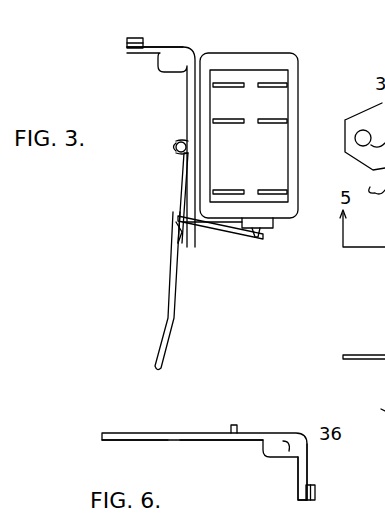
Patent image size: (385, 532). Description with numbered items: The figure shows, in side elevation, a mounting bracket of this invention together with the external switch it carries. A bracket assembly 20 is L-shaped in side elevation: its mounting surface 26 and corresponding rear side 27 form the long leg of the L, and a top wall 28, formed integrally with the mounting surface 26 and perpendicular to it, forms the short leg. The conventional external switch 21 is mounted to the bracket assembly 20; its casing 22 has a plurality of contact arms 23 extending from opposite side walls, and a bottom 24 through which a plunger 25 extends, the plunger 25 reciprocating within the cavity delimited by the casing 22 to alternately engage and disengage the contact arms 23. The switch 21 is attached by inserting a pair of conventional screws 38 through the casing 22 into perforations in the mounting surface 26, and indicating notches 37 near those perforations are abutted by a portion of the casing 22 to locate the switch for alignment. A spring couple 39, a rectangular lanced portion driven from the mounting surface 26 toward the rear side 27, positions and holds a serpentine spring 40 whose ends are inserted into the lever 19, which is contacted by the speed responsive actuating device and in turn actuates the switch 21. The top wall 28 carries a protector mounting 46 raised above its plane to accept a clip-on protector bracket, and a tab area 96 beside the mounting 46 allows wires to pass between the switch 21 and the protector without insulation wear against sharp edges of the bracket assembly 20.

In FIG. 3, the lever 19 is at (166, 282).
In FIG. 3, the bracket assembly 20 is at (153, 55).
In FIG. 3, the external switch 21 is at (249, 52).
In FIG. 3, the casing 22 is at (288, 66).
In FIG. 3, the contact arms 23 is at (280, 123).
In FIG. 3, the bottom 24 is at (298, 218).
In FIG. 3, the plunger 25 is at (272, 232).
In FIG. 6, the mounting surface 26 is at (168, 433).
In FIG. 6, the rear side 27 is at (147, 441).
In FIG. 3, the top wall 28 is at (172, 50).
In FIG. 6, the top wall 28 is at (308, 472).
In FIG. 6, the indicating notches 37 is at (242, 423).
In FIG. 3, the screws 38 is at (180, 134).
In FIG. 6, the spring couple 39 is at (190, 441).
In FIG. 3, the spring 40 is at (180, 190).
In FIG. 3, the protector mounting 46 is at (139, 30).
In FIG. 6, the protector mounting 46 is at (321, 494).
In FIG. 6, the tab area 96 is at (285, 443).